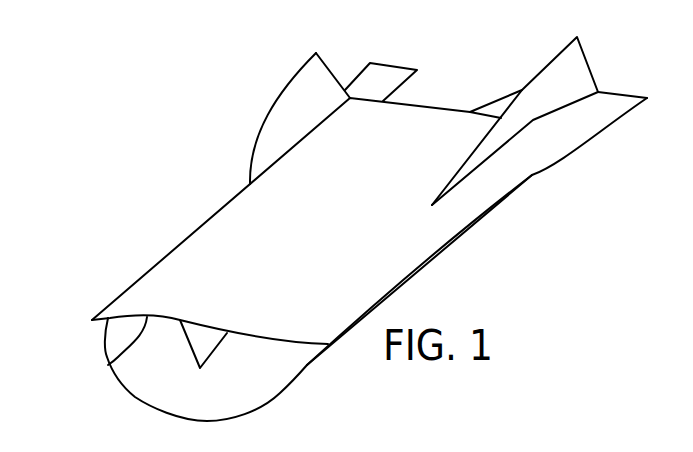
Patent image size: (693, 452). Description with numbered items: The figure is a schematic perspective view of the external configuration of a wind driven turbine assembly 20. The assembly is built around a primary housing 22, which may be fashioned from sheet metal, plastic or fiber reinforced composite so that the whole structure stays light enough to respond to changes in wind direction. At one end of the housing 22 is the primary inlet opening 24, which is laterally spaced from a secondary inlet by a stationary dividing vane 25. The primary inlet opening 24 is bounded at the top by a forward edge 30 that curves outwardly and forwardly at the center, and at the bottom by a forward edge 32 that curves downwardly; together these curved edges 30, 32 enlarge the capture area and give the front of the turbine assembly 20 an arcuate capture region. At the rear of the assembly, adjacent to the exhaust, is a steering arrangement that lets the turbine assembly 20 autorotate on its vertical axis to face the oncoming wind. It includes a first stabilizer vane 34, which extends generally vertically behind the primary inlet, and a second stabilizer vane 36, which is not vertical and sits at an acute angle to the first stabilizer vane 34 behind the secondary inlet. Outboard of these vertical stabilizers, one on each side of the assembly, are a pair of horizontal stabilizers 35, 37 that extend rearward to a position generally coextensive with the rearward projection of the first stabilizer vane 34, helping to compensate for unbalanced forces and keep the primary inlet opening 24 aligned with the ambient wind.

The wind driven turbine assembly 20 is at (227, 214).
The primary housing 22 is at (202, 260).
The primary inlet opening 24 is at (173, 393).
The stationary dividing vane 25 is at (205, 340).
The forward edge of the primary inlet opening 30 is at (113, 357).
The forward edge of the bottom 32 is at (267, 403).
The first stabilizer vane 34 is at (545, 83).
The horizontal stabilizer 35 is at (598, 117).
The second stabilizer vane 36 is at (288, 110).
The horizontal stabilizer 37 is at (375, 83).